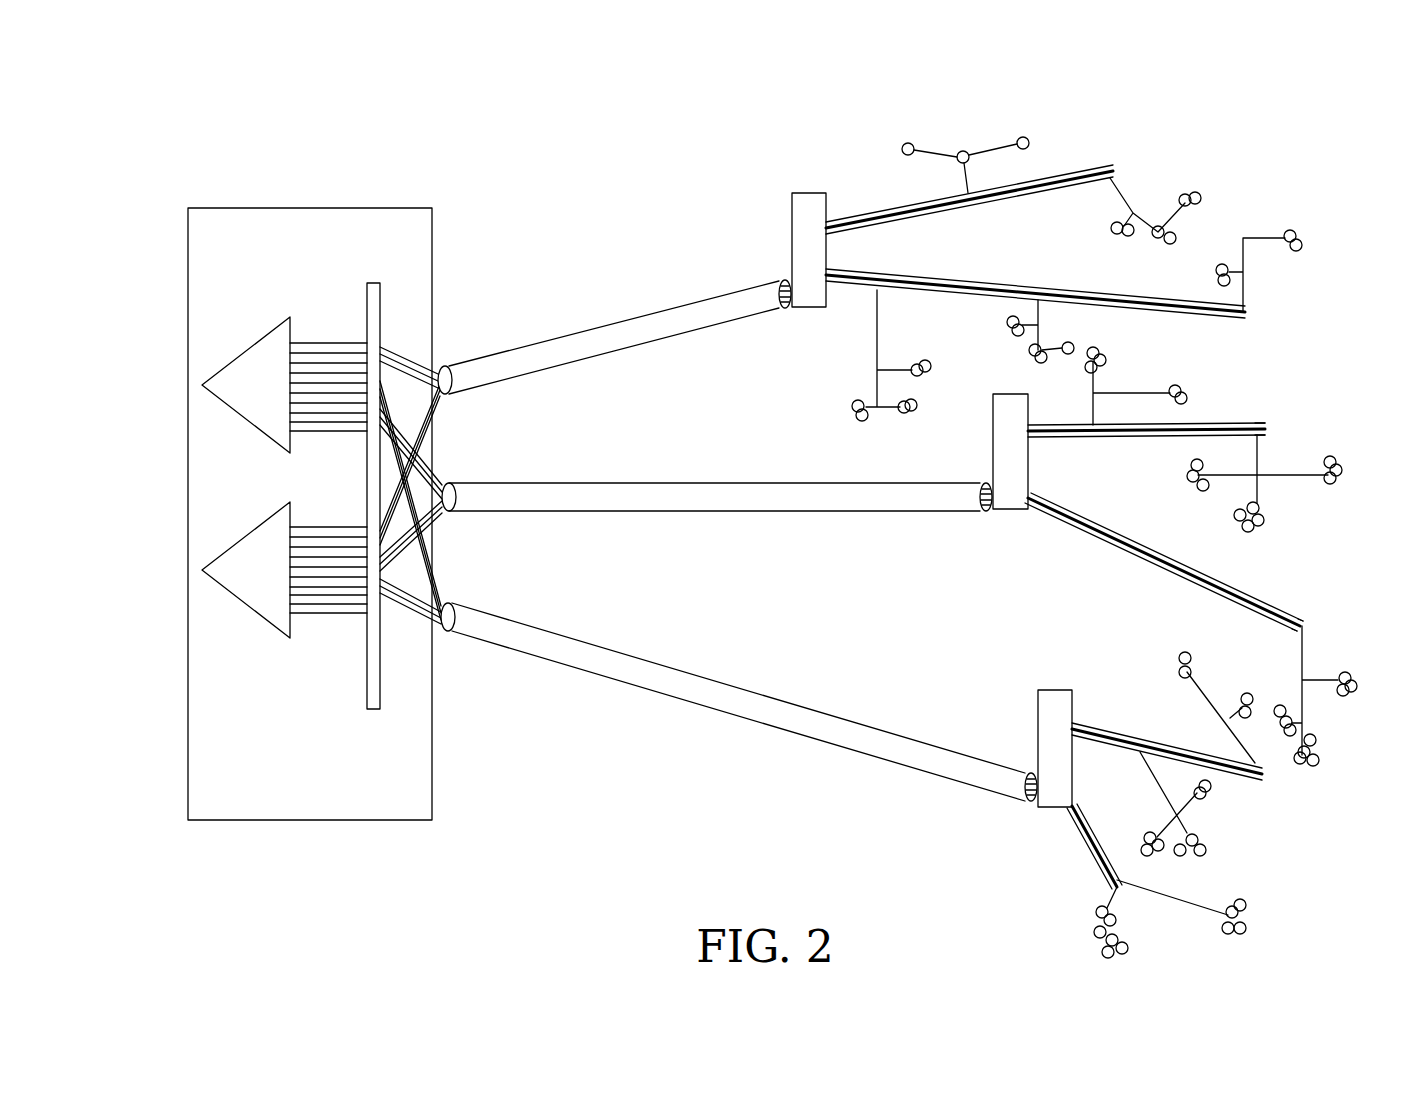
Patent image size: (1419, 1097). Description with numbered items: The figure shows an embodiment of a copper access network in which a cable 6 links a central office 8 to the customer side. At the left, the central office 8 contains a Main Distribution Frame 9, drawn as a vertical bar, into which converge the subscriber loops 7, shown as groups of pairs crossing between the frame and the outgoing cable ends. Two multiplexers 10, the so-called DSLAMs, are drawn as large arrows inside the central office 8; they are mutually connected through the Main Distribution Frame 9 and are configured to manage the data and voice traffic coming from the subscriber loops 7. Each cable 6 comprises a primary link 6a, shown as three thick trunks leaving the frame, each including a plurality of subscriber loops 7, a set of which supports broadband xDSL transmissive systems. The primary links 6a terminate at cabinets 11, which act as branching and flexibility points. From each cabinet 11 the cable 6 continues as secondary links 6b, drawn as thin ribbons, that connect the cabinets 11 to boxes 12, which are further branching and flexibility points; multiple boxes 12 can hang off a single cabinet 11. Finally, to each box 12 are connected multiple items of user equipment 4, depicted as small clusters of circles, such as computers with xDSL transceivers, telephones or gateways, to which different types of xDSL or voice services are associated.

The user equipment 4 is at (908, 149).
The cable 6 is at (923, 487).
The primary link 6a is at (588, 345).
The secondary link 6b is at (1062, 168).
The subscriber loop 7 is at (440, 568).
The central office 8 is at (305, 240).
The Main Distribution Frame 9 is at (374, 285).
The multiplexer 10 is at (240, 402).
The cabinet 11 is at (808, 290).
The box 12 is at (1265, 426).